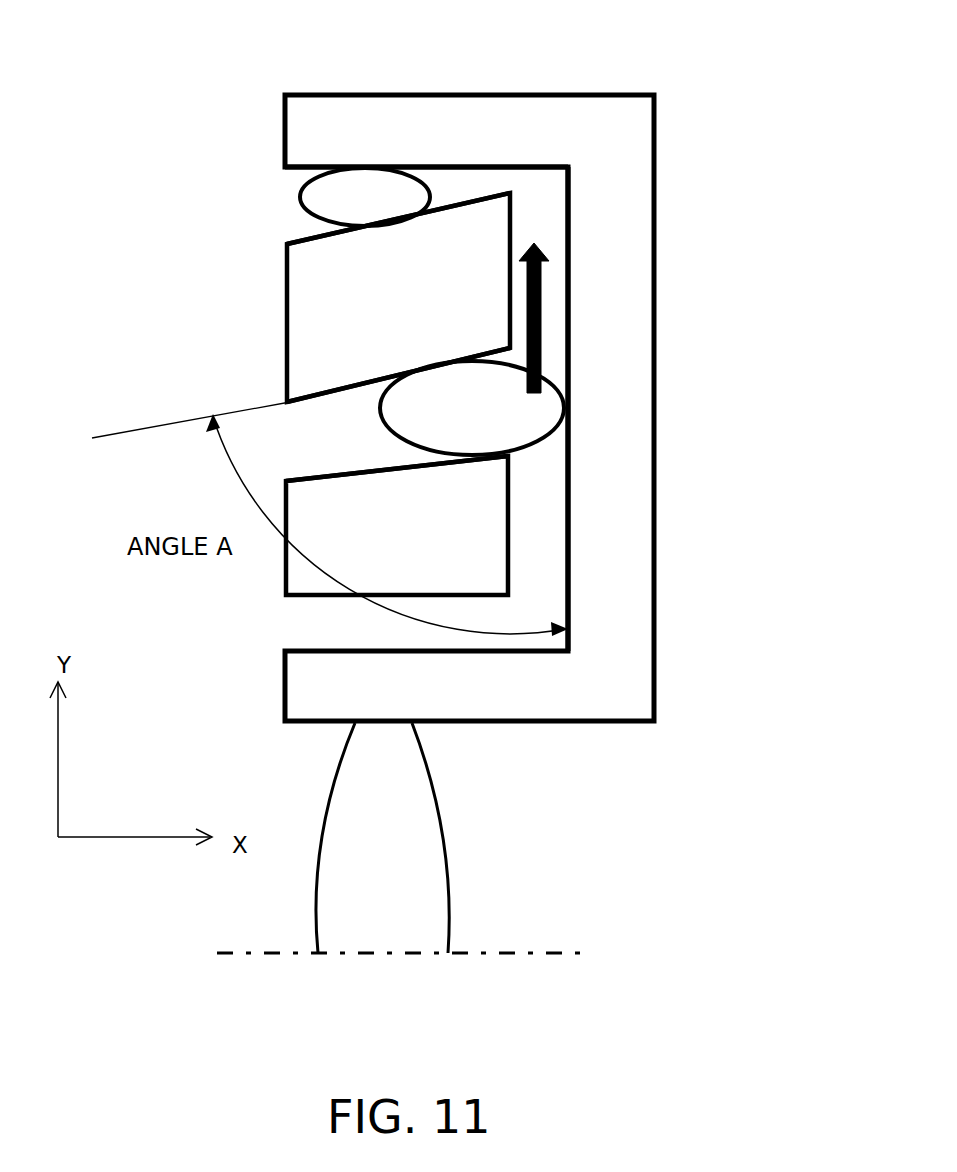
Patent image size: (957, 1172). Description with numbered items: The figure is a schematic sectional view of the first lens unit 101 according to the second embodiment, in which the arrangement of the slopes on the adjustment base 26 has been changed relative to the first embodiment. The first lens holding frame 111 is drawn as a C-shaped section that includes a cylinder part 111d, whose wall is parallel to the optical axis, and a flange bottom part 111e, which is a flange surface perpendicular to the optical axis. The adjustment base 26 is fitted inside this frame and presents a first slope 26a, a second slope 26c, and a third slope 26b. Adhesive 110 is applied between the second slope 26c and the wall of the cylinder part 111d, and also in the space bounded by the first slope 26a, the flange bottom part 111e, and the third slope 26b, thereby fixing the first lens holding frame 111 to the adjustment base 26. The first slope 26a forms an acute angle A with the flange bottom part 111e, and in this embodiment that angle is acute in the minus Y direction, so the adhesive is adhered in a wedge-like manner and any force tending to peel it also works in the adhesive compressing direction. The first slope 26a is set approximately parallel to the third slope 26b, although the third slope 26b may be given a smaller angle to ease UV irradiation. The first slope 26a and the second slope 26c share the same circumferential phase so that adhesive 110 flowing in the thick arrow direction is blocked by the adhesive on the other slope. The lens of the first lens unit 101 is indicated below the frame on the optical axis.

The adhesive 110 is at (365, 183).
The first lens holding frame 111 is at (612, 455).
The cylinder part 111d is at (500, 162).
The flange bottom part 111e is at (572, 352).
The adjustment base 26 is at (445, 323).
The first slope 26a is at (347, 385).
The third slope 26b is at (427, 468).
The second slope 26c is at (317, 235).
The first lens unit 101 is at (402, 928).